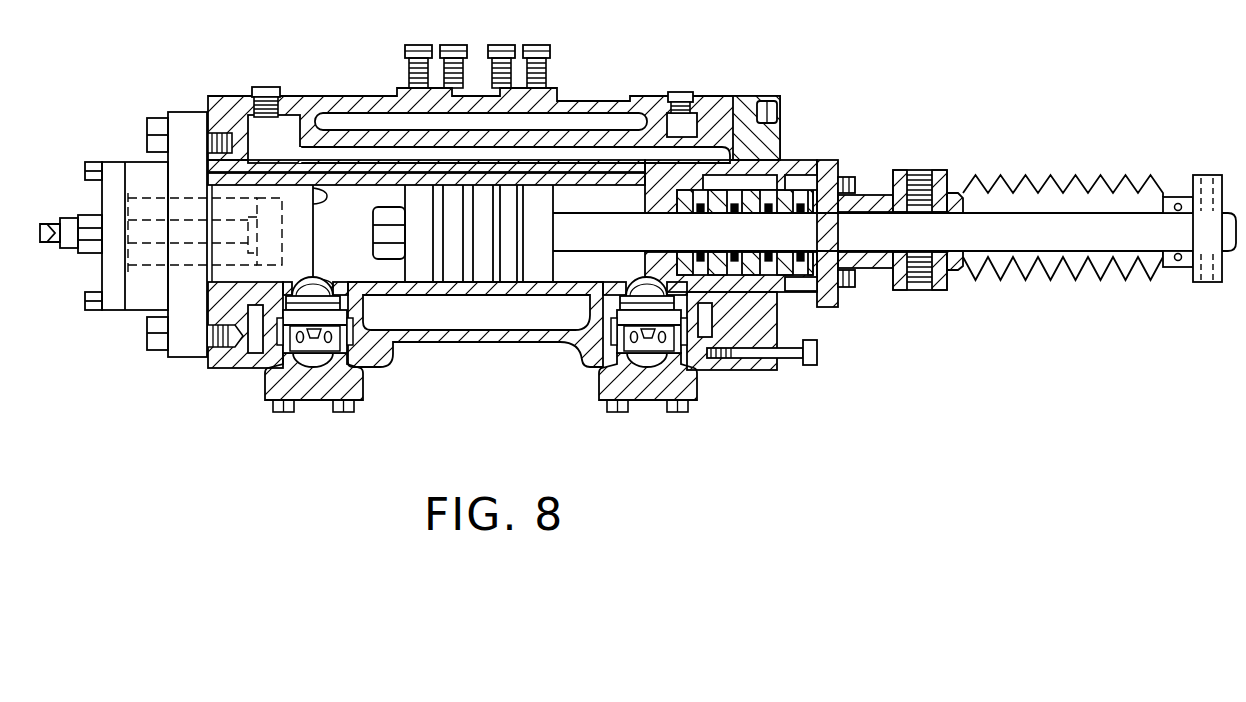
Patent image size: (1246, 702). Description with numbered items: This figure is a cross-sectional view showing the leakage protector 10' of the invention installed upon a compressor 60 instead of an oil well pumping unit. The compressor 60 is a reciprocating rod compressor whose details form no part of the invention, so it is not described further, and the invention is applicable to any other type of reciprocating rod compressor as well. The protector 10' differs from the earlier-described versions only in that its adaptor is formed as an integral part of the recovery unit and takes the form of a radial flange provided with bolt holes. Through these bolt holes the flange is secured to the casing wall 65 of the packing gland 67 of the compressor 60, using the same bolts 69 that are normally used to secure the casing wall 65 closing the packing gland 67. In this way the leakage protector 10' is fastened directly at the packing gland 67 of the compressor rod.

The compressor 60 is at (597, 97).
The casing wall 65 is at (818, 163).
The packing gland 67 is at (800, 290).
The bolts 69 is at (793, 176).
The leakage protector 10' is at (1084, 200).